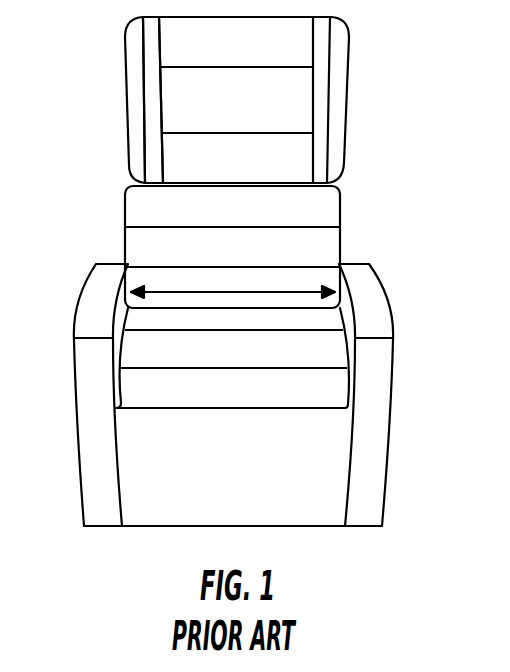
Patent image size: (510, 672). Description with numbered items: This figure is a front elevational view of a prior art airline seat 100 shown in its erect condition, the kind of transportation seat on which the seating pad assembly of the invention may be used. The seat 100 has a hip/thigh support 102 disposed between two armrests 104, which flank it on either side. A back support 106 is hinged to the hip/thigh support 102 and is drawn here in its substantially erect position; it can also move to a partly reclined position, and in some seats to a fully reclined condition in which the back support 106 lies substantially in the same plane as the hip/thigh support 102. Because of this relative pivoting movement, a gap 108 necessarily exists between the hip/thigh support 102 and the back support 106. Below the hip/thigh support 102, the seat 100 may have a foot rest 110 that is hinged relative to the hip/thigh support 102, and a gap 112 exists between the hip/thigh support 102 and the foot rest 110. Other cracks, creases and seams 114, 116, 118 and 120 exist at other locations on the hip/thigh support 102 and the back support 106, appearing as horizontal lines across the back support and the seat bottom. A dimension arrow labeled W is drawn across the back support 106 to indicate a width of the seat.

The airline seat 100 is at (367, 146).
The hip/thigh support 102 is at (133, 348).
The armrests 104 is at (372, 294).
The back support 106 is at (165, 113).
The gap 108 is at (317, 310).
The foot rest 110 is at (333, 467).
The gap 112 is at (143, 410).
The crack, crease or seam 114 is at (330, 228).
The crack, crease or seam 116 is at (143, 332).
The crack, crease or seam 118 is at (178, 133).
The crack, crease or seam 120 is at (161, 86).
The seat width W is at (163, 289).